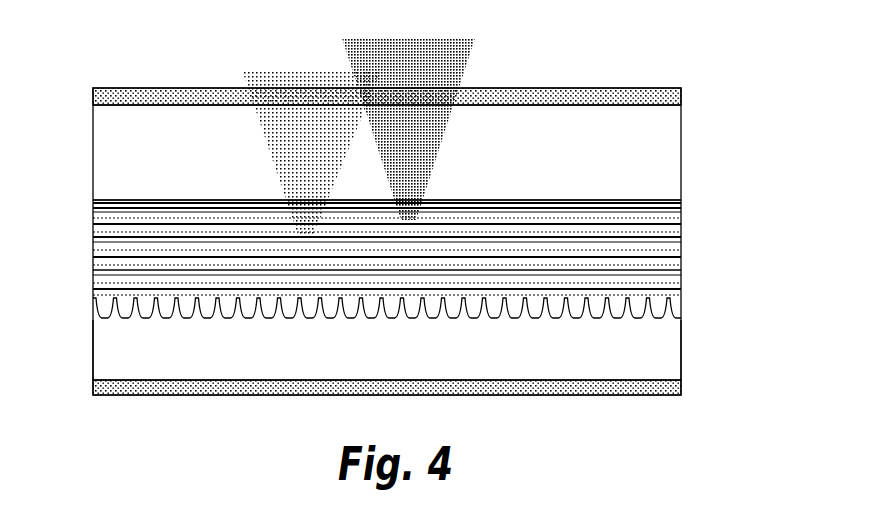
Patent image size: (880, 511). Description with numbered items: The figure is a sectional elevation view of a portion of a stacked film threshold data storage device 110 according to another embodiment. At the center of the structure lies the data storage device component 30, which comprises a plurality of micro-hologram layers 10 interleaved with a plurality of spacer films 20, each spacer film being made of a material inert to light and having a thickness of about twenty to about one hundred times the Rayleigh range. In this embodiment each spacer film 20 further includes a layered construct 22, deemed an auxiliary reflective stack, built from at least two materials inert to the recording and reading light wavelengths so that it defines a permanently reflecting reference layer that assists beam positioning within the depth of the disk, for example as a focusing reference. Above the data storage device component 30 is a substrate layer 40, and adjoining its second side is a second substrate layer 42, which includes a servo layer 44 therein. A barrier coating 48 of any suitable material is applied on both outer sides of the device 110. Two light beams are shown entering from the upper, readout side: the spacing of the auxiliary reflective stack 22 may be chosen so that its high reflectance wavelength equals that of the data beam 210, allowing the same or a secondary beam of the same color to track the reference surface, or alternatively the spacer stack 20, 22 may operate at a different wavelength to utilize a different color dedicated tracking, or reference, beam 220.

The data storage device 110 is at (606, 55).
The barrier coating 48 is at (681, 92).
The substrate layer 40 is at (79, 152).
The second substrate layer 42 is at (79, 349).
The data storage device component 30 is at (399, 250).
The spacer film 20 is at (399, 250).
The micro-hologram layer 10 is at (682, 203).
The auxiliary reflective stack 22 is at (682, 221).
The servo layer 44 is at (695, 305).
The data beam 210 is at (250, 72).
The tracking beam 220 is at (474, 38).